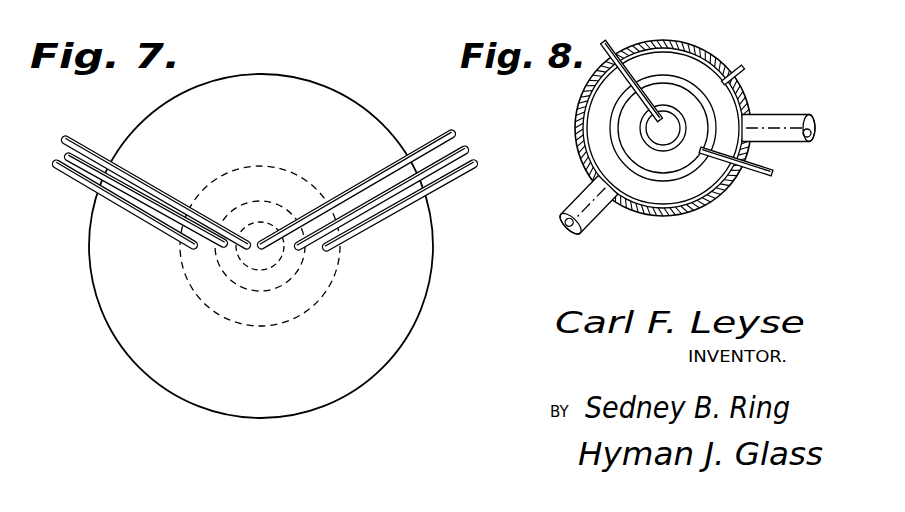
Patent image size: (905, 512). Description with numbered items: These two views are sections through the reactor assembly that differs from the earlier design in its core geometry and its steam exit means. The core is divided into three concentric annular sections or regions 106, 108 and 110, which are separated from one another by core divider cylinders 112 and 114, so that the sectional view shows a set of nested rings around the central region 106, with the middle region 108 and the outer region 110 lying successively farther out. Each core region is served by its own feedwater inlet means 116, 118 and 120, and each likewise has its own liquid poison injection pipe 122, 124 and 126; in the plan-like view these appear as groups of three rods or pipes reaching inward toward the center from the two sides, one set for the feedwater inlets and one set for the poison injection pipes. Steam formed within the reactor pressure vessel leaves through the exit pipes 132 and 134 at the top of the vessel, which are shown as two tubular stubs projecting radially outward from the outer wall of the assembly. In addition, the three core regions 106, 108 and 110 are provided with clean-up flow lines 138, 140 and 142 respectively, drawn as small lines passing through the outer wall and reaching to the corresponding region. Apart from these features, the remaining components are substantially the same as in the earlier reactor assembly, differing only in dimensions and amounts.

In FIG. 8, the annular core region 106 is at (663, 128).
In FIG. 8, the annular core region 108 is at (664, 138).
In FIG. 8, the annular core region 110 is at (663, 128).
In FIG. 8, the core divider cylinder 112 is at (688, 109).
In FIG. 8, the core divider cylinder 114 is at (702, 83).
In FIG. 7, the feedwater inlet means 116 is at (432, 138).
In FIG. 7, the feedwater inlet means 118 is at (458, 150).
In FIG. 7, the feedwater inlet means 120 is at (472, 172).
In FIG. 7, the liquid poison injection pipe 122 is at (97, 158).
In FIG. 7, the liquid poison injection pipe 124 is at (70, 156).
In FIG. 7, the liquid poison injection pipe 126 is at (80, 183).
In FIG. 8, the steam exit pipe 132 is at (785, 122).
In FIG. 8, the steam exit pipe 134 is at (592, 222).
In FIG. 8, the clean-up flow line 138 is at (638, 63).
In FIG. 8, the clean-up flow line 140 is at (744, 66).
In FIG. 8, the clean-up flow line 142 is at (722, 190).